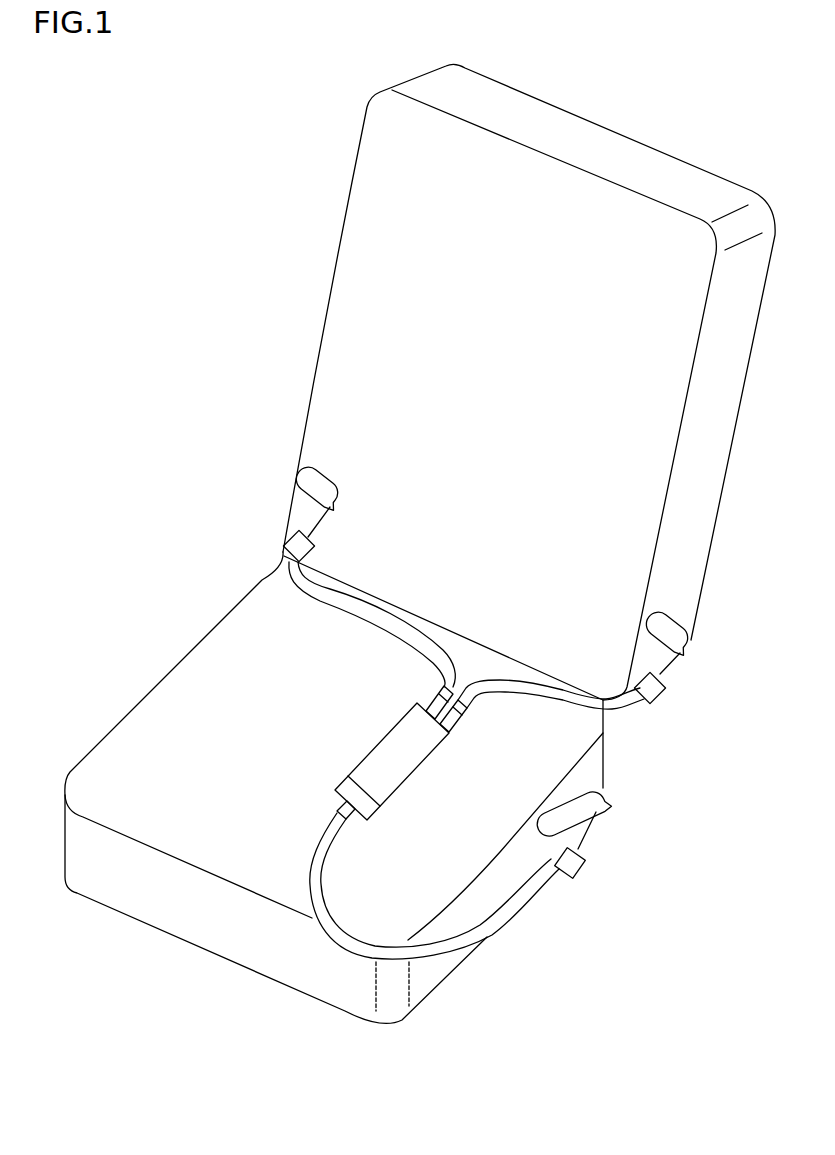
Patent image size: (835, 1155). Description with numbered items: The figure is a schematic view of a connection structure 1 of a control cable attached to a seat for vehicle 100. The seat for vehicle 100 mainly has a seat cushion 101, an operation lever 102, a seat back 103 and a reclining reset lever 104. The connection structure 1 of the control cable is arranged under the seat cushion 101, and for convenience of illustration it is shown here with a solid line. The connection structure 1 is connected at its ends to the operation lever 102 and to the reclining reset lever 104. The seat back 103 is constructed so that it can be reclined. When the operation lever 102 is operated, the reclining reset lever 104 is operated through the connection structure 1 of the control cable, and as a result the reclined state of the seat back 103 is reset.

The connection structure of the control cable 1 is at (403, 757).
The seat for vehicle 100 is at (703, 121).
The seat cushion 101 is at (169, 724).
The operation lever 102 is at (594, 800).
The seat back 103 is at (580, 147).
The reclining reset lever 104 is at (318, 489).